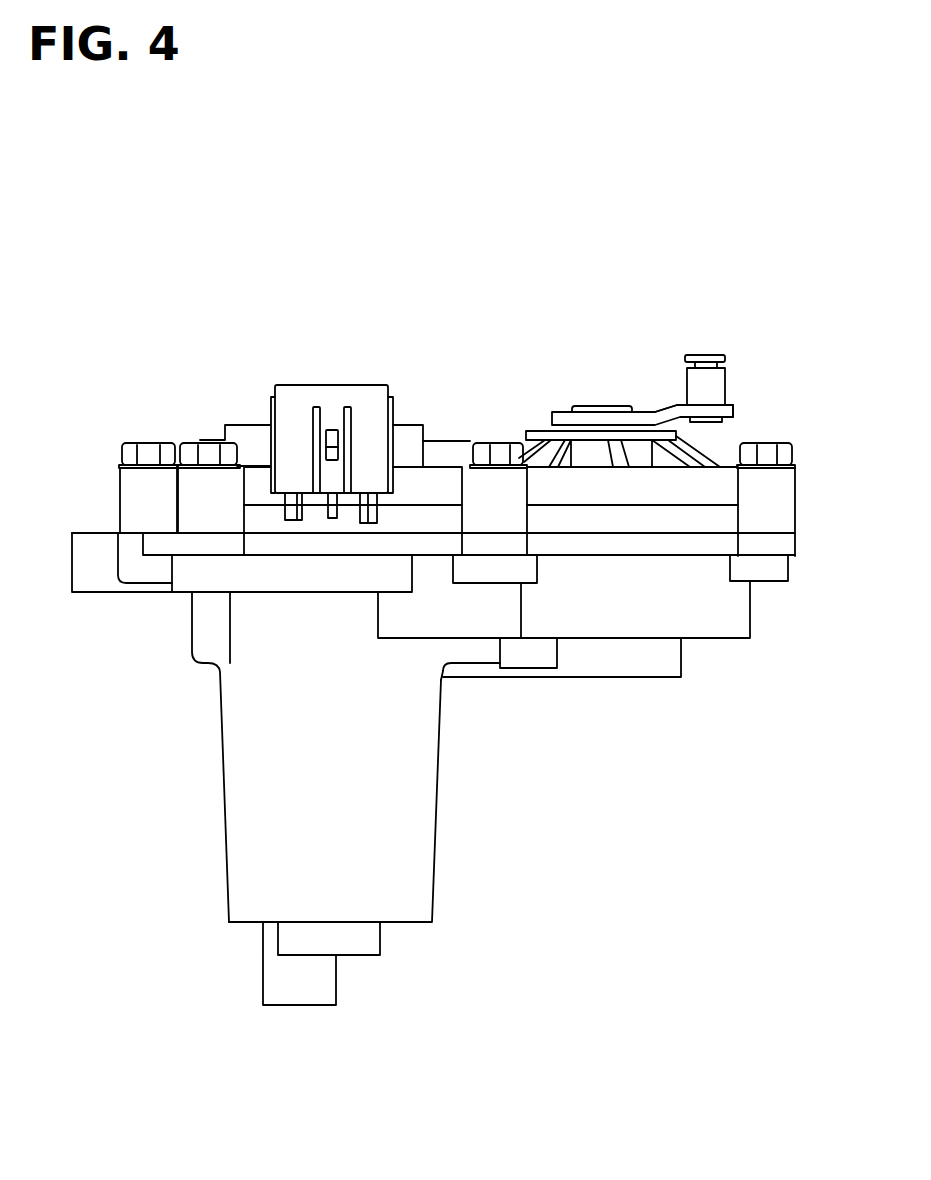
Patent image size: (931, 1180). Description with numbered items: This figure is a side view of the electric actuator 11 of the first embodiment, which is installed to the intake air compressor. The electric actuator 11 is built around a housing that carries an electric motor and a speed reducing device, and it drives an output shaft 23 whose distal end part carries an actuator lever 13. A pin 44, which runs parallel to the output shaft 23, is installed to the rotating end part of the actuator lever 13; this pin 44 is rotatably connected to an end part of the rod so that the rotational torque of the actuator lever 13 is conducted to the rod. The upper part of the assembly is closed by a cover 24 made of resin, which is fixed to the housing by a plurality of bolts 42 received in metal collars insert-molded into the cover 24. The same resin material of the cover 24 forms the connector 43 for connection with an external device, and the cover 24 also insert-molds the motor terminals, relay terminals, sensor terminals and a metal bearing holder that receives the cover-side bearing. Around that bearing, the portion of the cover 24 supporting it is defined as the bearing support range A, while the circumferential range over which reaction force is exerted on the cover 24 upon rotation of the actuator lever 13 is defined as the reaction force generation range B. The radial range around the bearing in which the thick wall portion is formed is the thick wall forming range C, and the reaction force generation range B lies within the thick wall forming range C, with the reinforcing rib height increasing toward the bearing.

The electric actuator 11 is at (240, 378).
The actuator lever 13 is at (736, 412).
The output shaft 23 is at (580, 428).
The cover 24 is at (780, 502).
The bolts 42 is at (191, 446).
The connector 43 is at (363, 392).
The pin 44 is at (703, 376).
The bearing support range A is at (733, 405).
The reaction force generation range B is at (603, 404).
The thick wall forming range C is at (663, 406).